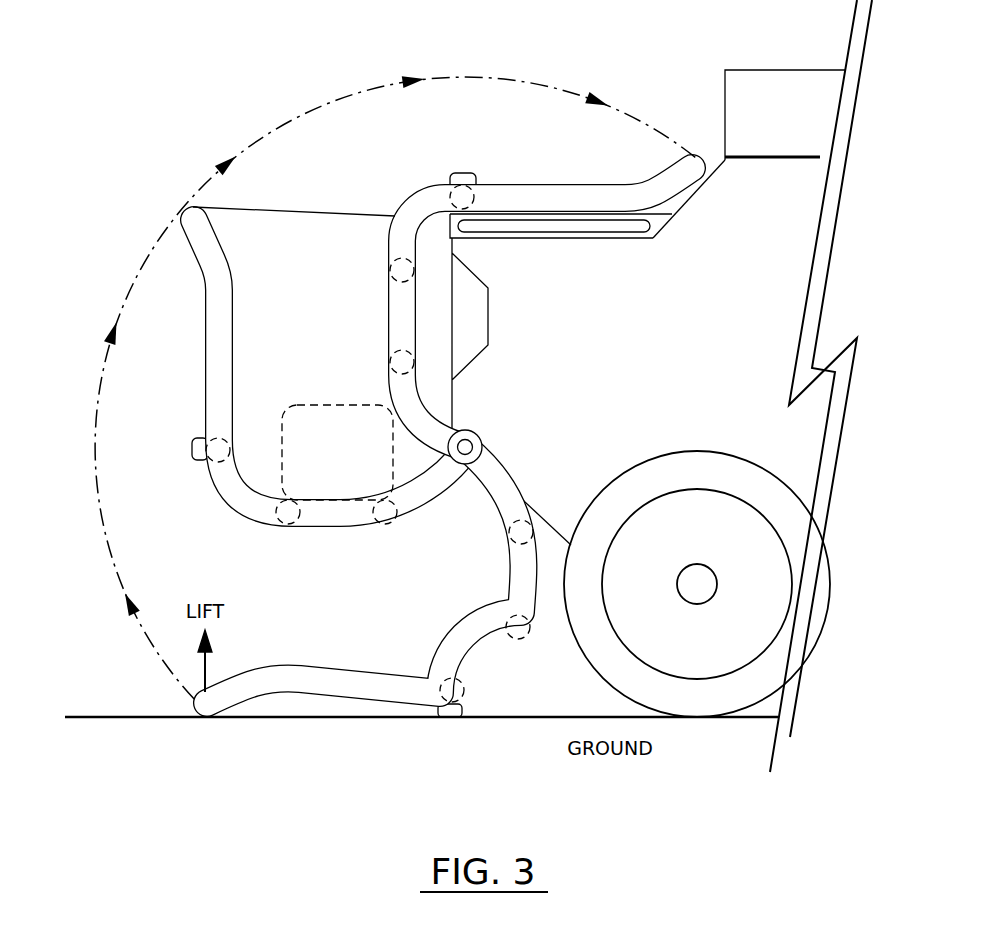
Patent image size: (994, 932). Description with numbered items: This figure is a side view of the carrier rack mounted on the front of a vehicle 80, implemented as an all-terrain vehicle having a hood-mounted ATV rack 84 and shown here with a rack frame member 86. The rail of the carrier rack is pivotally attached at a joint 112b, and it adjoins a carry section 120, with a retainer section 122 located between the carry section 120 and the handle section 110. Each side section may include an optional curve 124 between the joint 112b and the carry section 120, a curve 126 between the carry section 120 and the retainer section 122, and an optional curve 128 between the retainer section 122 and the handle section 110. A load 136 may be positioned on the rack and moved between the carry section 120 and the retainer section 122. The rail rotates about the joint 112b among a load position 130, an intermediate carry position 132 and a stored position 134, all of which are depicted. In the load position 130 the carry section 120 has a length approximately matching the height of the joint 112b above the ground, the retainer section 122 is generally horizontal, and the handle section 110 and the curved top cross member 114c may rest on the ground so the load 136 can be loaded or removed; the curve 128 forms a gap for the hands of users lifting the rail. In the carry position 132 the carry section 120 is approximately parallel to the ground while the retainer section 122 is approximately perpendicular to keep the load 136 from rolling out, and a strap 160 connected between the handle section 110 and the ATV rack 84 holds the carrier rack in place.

The vehicle 80 is at (674, 389).
The ATV rack 84 is at (570, 240).
The rack frame member 86 is at (690, 200).
The handle section 110 is at (185, 212).
The joint 112b is at (472, 428).
The top cross member 114c is at (453, 718).
The carry section 120 is at (260, 532).
The retainer section 122 is at (197, 278).
The curve 124 is at (450, 500).
The curve 126 is at (232, 508).
The curve 128 is at (233, 272).
The load position 130 is at (390, 664).
The carry position 132 is at (258, 341).
The stored position 134 is at (555, 179).
The load 136 is at (358, 403).
The strap 160 is at (300, 210).